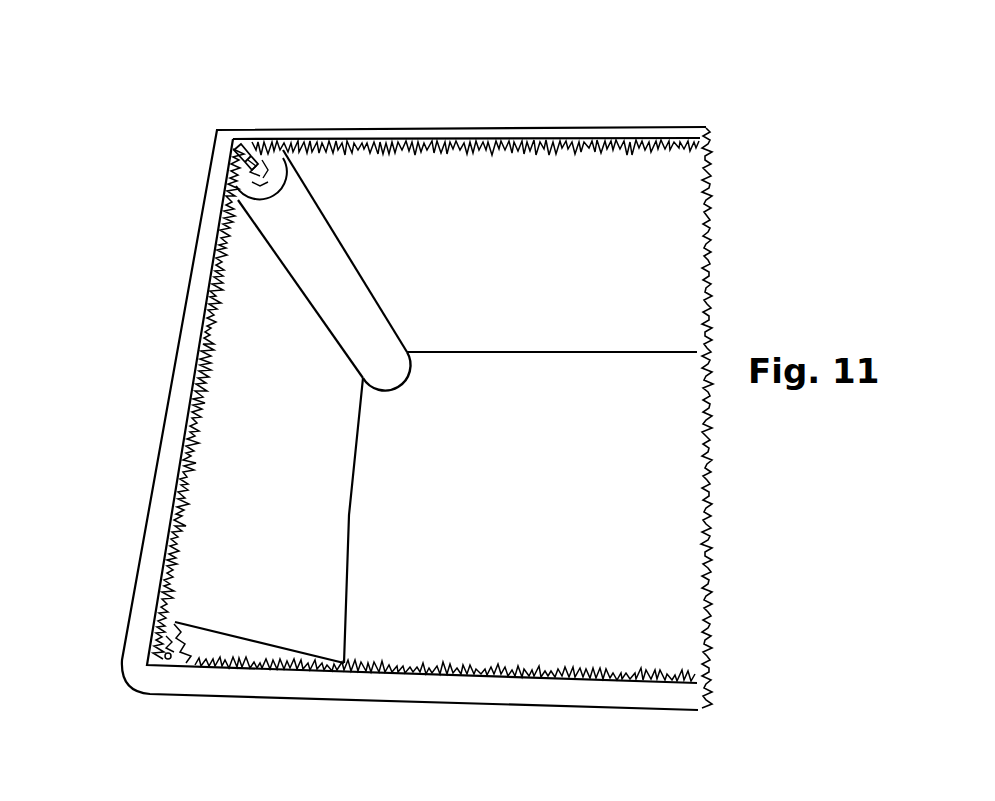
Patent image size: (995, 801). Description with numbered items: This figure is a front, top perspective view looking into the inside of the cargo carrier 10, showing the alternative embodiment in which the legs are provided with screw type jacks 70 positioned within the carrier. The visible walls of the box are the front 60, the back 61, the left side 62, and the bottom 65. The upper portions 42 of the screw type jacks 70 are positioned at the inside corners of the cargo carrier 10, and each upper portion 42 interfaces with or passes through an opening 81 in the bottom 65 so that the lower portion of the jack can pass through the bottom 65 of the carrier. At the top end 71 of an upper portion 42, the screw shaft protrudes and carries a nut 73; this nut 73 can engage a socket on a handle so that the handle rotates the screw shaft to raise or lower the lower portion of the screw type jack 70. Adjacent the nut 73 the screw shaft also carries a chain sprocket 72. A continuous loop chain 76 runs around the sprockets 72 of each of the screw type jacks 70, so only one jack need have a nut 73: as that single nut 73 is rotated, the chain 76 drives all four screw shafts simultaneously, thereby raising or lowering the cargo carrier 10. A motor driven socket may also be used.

The cargo carrier 10 is at (661, 92).
The upper portion 42 is at (332, 258).
The front 60 is at (392, 698).
The back 61 is at (545, 277).
The left side 62 is at (293, 448).
The bottom 65 is at (547, 509).
The screw type jack 70 is at (296, 328).
The top end 71 is at (280, 153).
The chain sprocket 72 is at (245, 172).
The nut 73 is at (242, 143).
The continuous loop chain 76 is at (468, 150).
The opening 81 is at (408, 370).